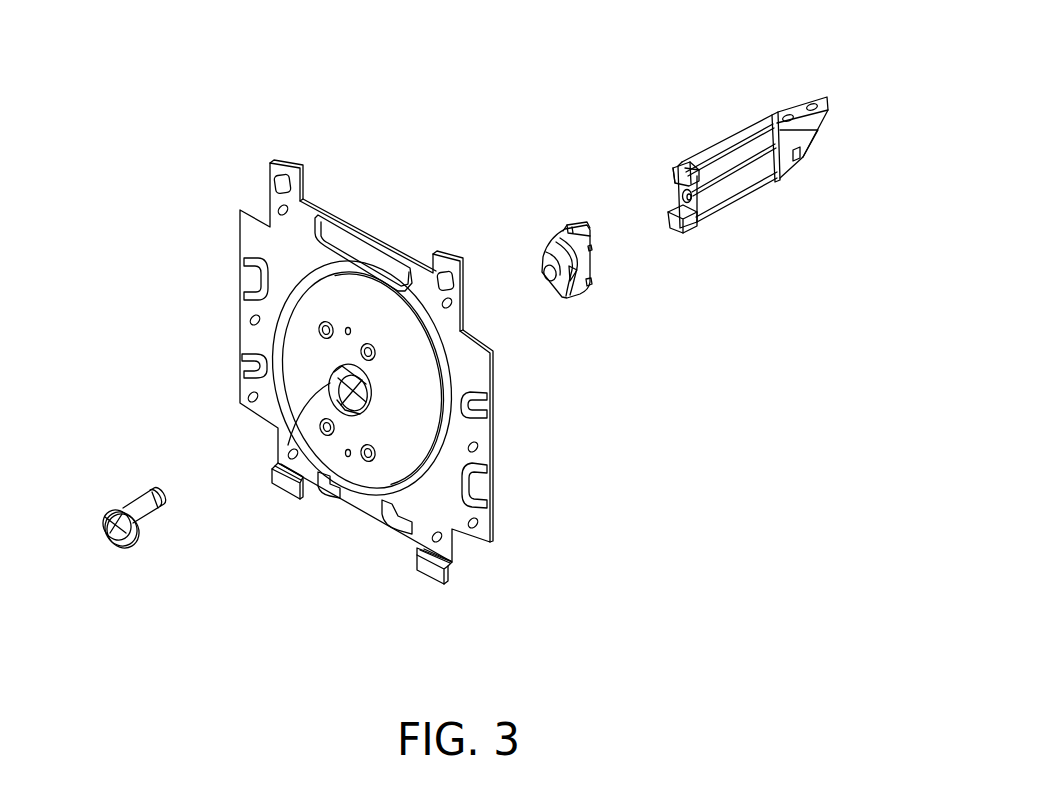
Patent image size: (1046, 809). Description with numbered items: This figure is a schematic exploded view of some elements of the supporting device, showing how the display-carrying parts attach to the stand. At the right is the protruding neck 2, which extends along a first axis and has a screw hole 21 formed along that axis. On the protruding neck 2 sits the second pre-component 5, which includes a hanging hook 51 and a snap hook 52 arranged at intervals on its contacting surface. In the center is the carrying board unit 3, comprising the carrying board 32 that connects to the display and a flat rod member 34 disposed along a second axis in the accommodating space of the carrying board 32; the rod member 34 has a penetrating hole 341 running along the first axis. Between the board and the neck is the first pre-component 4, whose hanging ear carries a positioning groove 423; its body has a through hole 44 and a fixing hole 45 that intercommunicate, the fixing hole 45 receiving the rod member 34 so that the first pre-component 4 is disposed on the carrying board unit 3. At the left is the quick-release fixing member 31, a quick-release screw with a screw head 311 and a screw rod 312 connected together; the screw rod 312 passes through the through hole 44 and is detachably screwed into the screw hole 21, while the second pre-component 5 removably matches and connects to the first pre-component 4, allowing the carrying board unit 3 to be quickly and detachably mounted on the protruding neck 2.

The protruding neck 2 is at (731, 108).
The screw hole 21 is at (690, 202).
The carrying board unit 3 is at (275, 138).
The quick-release fixing member 31 is at (187, 420).
The screw head 311 is at (113, 509).
The screw rod 312 is at (158, 492).
The carrying board 32 is at (240, 212).
The rod member 34 is at (300, 410).
The penetrating hole 341 is at (333, 408).
The first pre-component 4 is at (568, 200).
The positioning groove 423 is at (570, 225).
The through hole 44 is at (545, 276).
The fixing hole 45 is at (590, 283).
The second pre-component 5 is at (680, 95).
The hanging hook 51 is at (676, 170).
The snap hook 52 is at (668, 220).